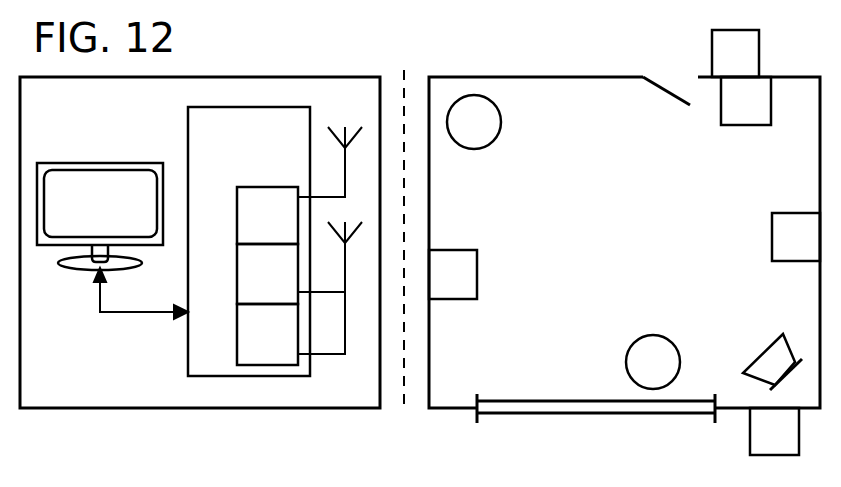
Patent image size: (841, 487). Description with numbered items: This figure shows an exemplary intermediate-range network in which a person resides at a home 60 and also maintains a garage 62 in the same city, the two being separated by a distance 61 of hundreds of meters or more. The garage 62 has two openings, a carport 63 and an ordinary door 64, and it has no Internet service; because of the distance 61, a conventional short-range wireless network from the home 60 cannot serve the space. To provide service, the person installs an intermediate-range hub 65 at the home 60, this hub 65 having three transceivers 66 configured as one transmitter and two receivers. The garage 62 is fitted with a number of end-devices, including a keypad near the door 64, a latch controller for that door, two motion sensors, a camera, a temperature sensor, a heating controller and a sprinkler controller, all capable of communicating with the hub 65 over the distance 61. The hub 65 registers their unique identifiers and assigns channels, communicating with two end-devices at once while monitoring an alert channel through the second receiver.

The home 60 is at (300, 77).
The distance 61 is at (404, 412).
The garage 62 is at (580, 77).
The carport 63 is at (476, 422).
The door 64 is at (675, 100).
The intermediate-range hub 65 is at (188, 136).
The transceivers 66 is at (110, 163).